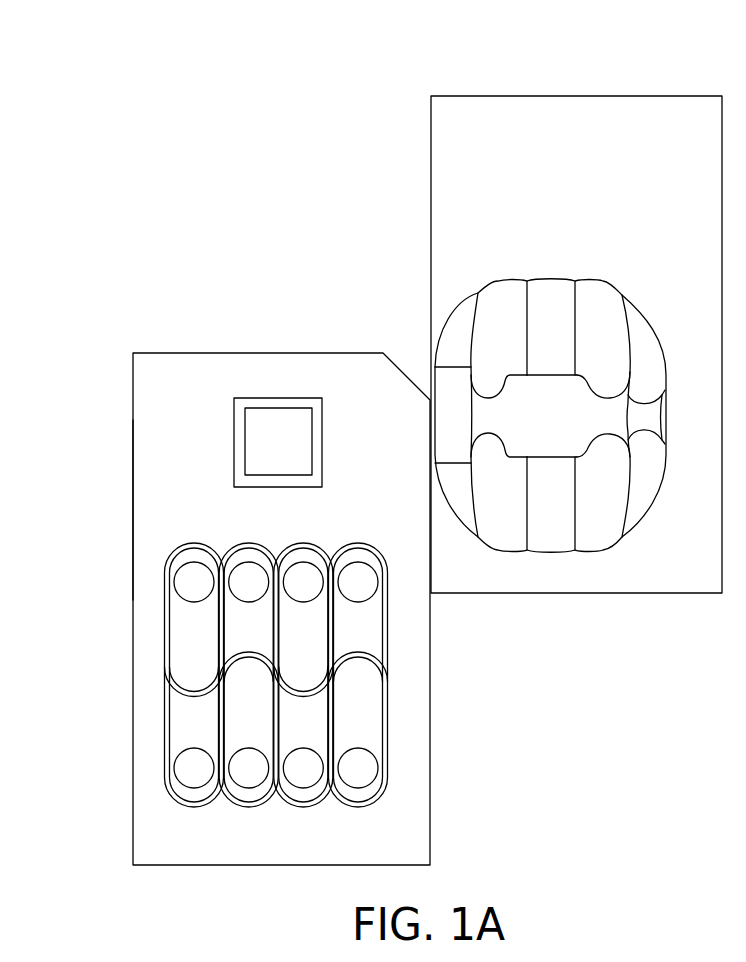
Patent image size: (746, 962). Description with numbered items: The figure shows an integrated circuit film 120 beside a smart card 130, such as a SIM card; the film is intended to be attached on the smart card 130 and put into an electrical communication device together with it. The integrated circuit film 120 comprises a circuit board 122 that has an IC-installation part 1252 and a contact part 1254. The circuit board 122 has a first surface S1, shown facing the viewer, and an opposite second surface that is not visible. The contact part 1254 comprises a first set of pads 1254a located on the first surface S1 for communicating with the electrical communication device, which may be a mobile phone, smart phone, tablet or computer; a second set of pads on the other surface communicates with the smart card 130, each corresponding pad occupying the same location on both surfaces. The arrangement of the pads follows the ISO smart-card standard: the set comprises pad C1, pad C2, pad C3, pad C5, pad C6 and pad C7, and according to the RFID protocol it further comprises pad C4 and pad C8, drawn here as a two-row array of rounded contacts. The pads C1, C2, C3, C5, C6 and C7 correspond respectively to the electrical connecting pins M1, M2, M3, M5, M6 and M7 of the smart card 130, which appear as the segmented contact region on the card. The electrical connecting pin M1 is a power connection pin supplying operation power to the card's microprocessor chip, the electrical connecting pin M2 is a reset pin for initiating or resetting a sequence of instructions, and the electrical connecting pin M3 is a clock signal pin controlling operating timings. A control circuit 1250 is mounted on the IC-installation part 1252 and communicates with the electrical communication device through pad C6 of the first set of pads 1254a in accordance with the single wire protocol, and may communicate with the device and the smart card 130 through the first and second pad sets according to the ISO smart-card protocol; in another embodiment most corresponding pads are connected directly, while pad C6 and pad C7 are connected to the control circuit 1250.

The integrated circuit film 120 is at (120, 328).
The circuit board 122 is at (142, 505).
The smart card 130 is at (576, 308).
The control circuit 1250 is at (280, 427).
The IC-installation part 1252 is at (297, 405).
The contact part 1254 is at (260, 677).
The first set of pads 1254a is at (260, 677).
The first surface S1 is at (327, 677).
The pad C1 is at (194, 798).
The pad C2 is at (248, 798).
The pad C3 is at (303, 798).
The pad C4 is at (359, 798).
The pad C5 is at (194, 558).
The pad C6 is at (248, 558).
The pad C7 is at (303, 558).
The pad C8 is at (359, 558).
The electrical connecting pin M1 is at (505, 533).
The electrical connecting pin M2 is at (548, 535).
The electrical connecting pin M3 is at (598, 534).
The electrical connecting pin M5 is at (500, 298).
The electrical connecting pin M6 is at (552, 298).
The electrical connecting pin M7 is at (596, 296).